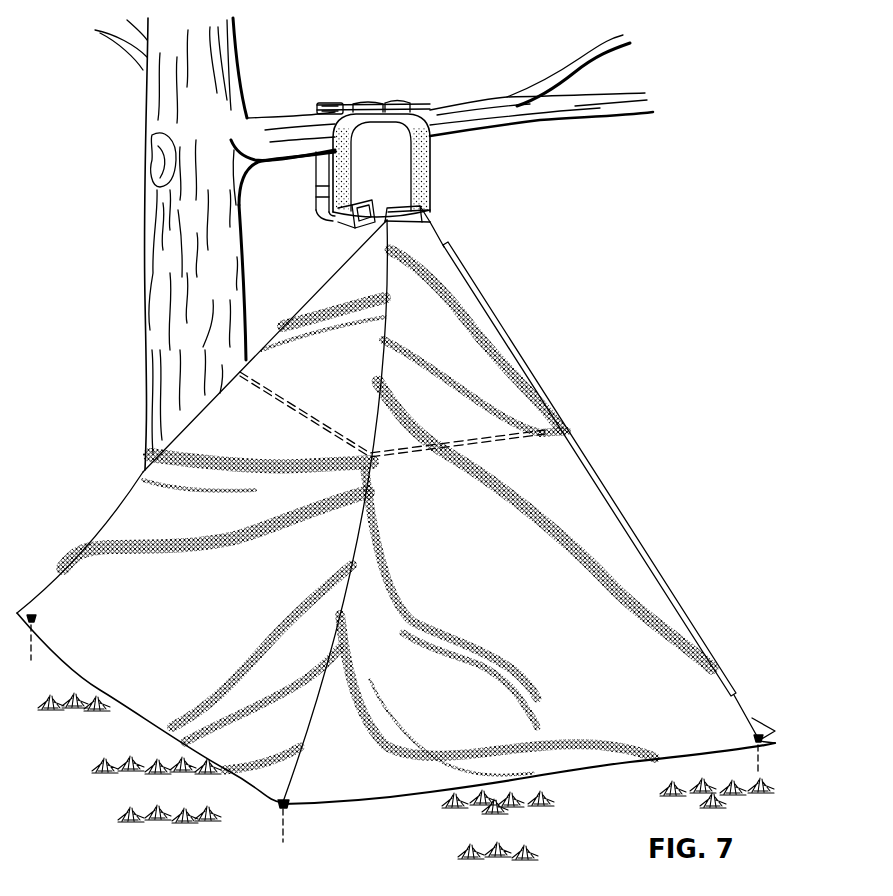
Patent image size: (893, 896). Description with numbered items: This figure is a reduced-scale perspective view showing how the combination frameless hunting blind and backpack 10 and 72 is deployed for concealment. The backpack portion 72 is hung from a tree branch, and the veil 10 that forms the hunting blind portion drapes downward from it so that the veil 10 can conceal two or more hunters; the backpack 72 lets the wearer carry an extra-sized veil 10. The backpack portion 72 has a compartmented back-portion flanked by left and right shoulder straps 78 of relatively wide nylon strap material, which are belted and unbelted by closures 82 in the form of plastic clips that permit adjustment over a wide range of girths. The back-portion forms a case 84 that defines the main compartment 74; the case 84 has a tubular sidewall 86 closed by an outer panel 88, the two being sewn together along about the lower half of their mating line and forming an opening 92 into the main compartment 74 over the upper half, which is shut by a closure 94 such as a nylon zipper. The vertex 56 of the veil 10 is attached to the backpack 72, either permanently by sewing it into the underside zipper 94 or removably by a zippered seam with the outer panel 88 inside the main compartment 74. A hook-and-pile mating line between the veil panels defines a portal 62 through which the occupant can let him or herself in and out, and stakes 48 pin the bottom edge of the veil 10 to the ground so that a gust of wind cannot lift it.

The veil 10 is at (320, 280).
The backpack portion 72 is at (367, 103).
The shoulder straps 78 is at (331, 105).
The closures 82 is at (315, 192).
The case 84 is at (315, 231).
The tubular sidewall 86 is at (358, 218).
The main compartment 74 is at (449, 165).
The opening 92 is at (393, 181).
The outer panel 88 is at (481, 213).
The closure 94 is at (425, 213).
The vertex seam 56 is at (433, 220).
The portal 62 is at (592, 464).
The stakes 48 is at (288, 829).